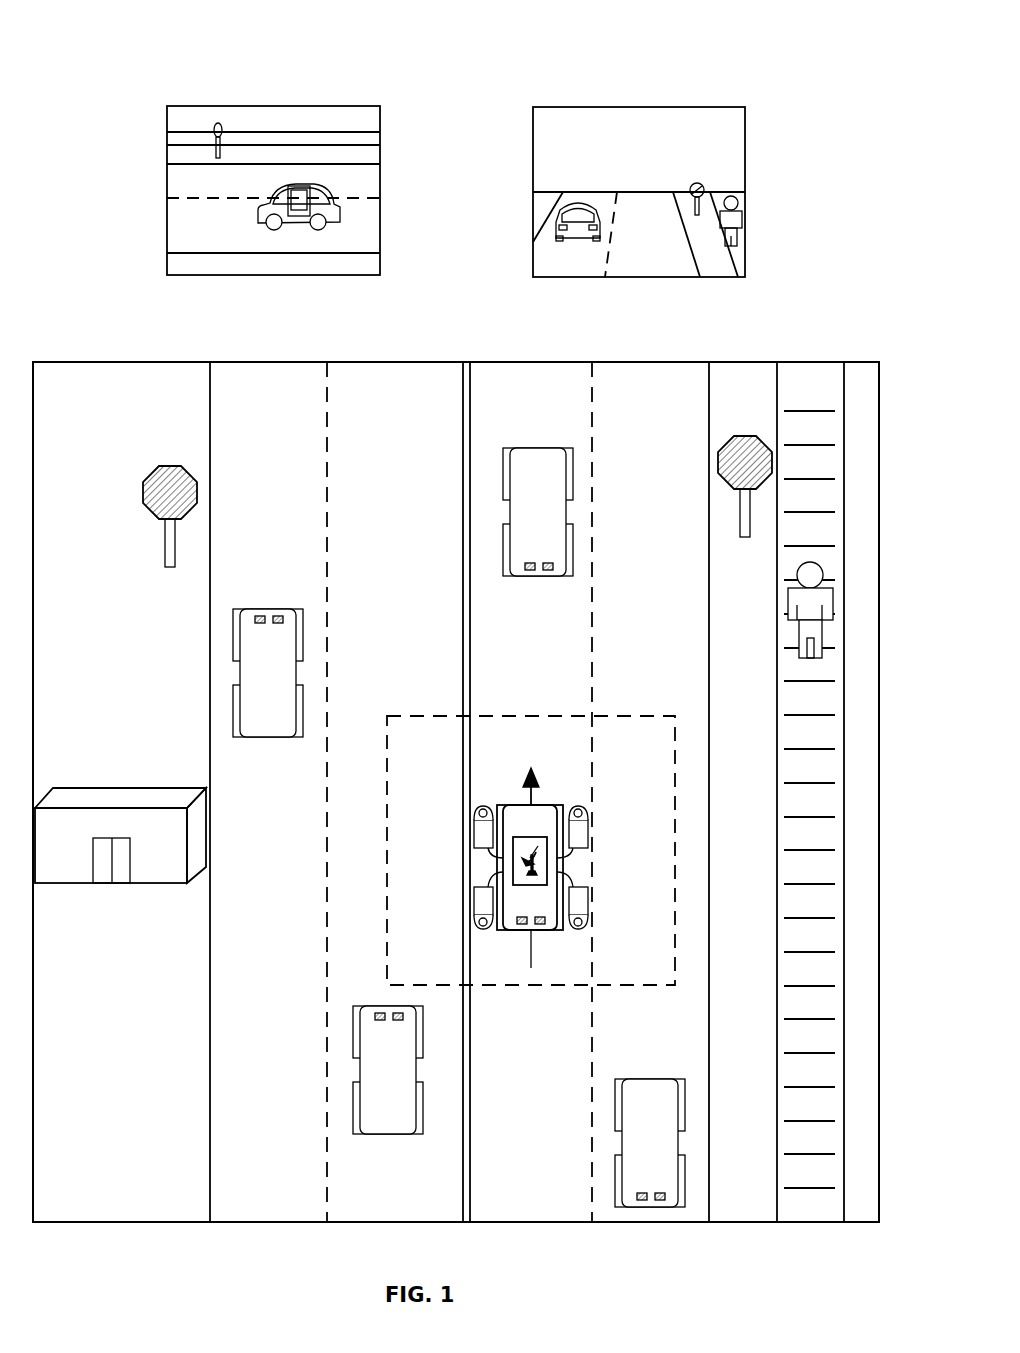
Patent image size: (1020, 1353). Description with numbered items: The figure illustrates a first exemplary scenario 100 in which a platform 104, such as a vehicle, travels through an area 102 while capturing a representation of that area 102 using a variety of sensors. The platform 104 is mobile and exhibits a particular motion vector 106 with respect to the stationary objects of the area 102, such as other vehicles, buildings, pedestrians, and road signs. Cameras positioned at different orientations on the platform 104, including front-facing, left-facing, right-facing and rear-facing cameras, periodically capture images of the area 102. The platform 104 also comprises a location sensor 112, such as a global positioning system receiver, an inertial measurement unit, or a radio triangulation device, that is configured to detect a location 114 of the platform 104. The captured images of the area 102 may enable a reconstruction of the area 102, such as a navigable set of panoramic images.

The first exemplary scenario 100 is at (836, 44).
The area 102 is at (95, 362).
The platform 104 is at (521, 805).
The motion vector 106 is at (538, 772).
The location sensor 112 is at (528, 840).
The location 114 is at (430, 716).